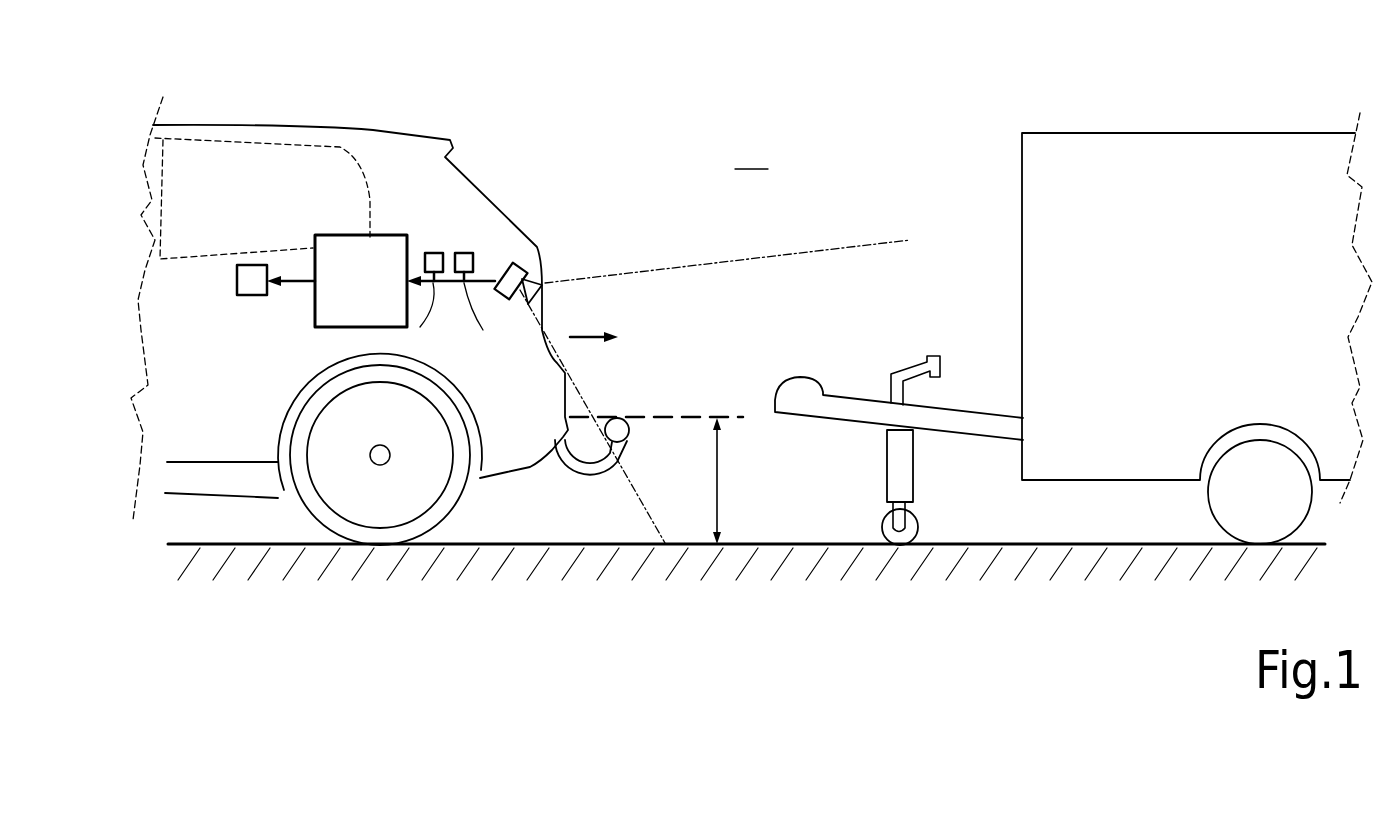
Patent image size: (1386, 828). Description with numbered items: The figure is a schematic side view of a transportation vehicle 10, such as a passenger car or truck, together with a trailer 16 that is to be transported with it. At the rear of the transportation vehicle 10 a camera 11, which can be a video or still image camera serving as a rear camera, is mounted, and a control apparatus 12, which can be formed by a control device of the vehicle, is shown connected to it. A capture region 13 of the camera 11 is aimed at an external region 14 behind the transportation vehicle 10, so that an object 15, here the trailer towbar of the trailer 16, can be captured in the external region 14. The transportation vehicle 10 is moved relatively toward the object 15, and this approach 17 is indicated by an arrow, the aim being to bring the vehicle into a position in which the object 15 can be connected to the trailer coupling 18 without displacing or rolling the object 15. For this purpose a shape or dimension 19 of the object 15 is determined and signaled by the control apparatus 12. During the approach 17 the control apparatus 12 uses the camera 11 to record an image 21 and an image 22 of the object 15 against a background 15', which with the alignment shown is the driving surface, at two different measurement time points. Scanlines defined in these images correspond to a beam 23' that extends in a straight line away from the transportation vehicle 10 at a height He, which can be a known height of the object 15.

The transportation vehicle 10 is at (305, 127).
The camera 11 is at (522, 270).
The control apparatus 12 is at (373, 235).
The capture region 13 is at (650, 267).
The external region 14 is at (751, 156).
The object 15 is at (899, 364).
The background 15' is at (939, 487).
The trailer 16 is at (1020, 177).
The approach 17 is at (587, 337).
The trailer coupling 18 is at (617, 420).
The shape or dimension 19 is at (248, 265).
The image 21 is at (432, 253).
The image 22 is at (460, 253).
The beam 23' is at (656, 361).
The height He is at (717, 478).